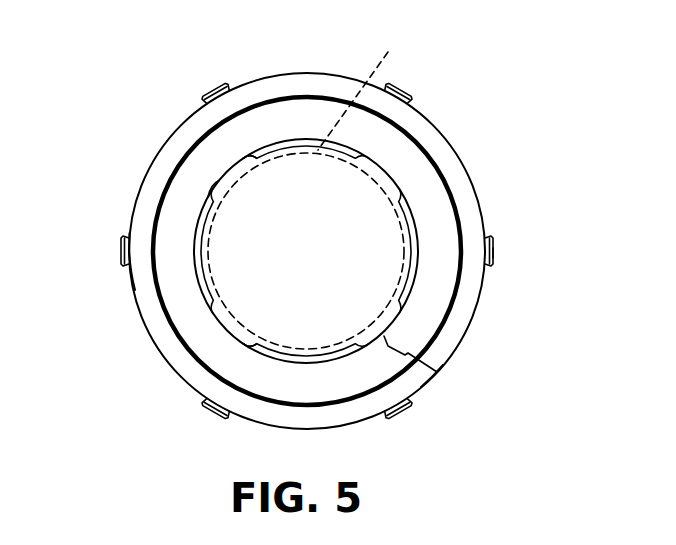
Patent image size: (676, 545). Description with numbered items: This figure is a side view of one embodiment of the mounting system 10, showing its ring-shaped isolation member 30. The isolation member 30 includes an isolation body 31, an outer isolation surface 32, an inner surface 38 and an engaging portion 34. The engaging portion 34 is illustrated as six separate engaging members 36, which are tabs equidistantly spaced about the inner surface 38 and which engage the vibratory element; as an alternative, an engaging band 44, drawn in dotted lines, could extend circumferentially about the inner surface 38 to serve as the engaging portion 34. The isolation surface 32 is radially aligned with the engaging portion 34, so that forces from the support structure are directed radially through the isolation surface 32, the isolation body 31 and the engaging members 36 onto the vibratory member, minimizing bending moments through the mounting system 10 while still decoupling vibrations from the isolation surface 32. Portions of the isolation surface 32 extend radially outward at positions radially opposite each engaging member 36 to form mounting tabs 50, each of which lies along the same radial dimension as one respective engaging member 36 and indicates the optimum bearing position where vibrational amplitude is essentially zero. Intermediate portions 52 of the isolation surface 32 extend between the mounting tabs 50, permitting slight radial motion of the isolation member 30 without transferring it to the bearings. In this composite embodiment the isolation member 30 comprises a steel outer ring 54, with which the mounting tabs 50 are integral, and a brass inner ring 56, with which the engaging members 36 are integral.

The mounting system 10 is at (434, 97).
The isolation member 30 is at (464, 146).
The isolation body 31 is at (400, 355).
The isolation surface 32 is at (495, 248).
The engaging portion 34 is at (262, 172).
The engaging members 36 is at (250, 343).
The inner surface 38 is at (214, 190).
The engaging band 44 is at (372, 90).
The mounting tabs 50 is at (496, 256).
The intermediate portions 52 is at (470, 335).
The outer ring 54 is at (143, 311).
The inner ring 56 is at (175, 196).